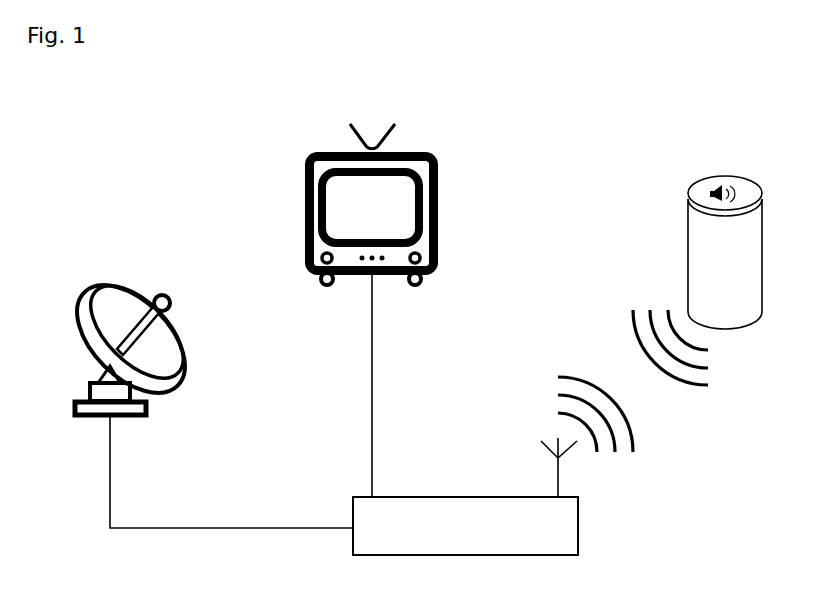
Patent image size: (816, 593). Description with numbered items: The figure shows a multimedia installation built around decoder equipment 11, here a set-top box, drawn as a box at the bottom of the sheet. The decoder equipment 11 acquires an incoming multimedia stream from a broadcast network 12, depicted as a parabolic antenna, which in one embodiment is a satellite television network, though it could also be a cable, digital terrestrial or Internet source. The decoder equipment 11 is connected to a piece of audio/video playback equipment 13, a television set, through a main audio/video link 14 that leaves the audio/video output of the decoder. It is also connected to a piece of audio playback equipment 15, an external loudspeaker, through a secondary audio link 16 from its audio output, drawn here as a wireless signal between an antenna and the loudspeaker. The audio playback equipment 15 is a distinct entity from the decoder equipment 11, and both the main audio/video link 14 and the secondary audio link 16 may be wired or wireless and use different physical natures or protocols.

The decoder equipment 11 is at (465, 526).
The broadcast network 12 is at (112, 287).
The audio/video playback equipment 13 is at (305, 207).
The main audio/video link 14 is at (372, 398).
The audio playback equipment 15 is at (727, 182).
The secondary audio link 16 is at (688, 386).